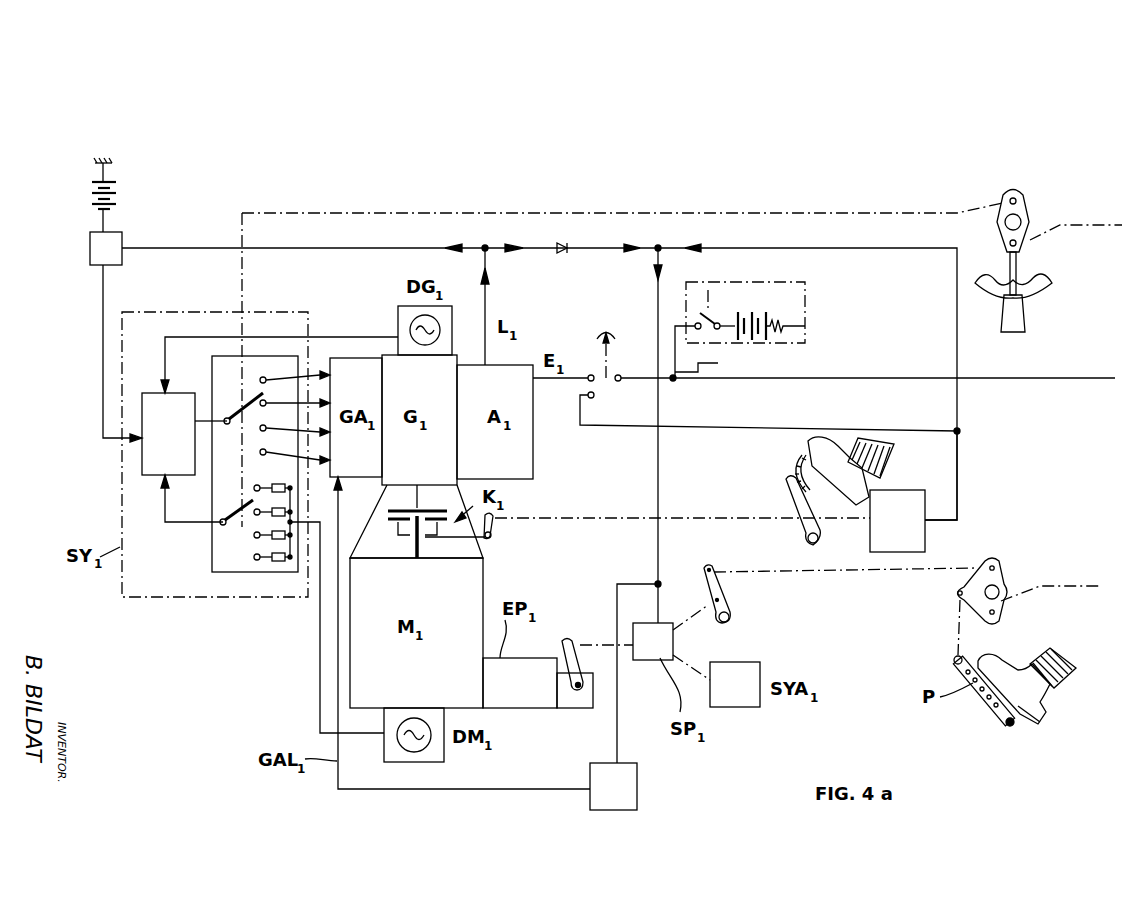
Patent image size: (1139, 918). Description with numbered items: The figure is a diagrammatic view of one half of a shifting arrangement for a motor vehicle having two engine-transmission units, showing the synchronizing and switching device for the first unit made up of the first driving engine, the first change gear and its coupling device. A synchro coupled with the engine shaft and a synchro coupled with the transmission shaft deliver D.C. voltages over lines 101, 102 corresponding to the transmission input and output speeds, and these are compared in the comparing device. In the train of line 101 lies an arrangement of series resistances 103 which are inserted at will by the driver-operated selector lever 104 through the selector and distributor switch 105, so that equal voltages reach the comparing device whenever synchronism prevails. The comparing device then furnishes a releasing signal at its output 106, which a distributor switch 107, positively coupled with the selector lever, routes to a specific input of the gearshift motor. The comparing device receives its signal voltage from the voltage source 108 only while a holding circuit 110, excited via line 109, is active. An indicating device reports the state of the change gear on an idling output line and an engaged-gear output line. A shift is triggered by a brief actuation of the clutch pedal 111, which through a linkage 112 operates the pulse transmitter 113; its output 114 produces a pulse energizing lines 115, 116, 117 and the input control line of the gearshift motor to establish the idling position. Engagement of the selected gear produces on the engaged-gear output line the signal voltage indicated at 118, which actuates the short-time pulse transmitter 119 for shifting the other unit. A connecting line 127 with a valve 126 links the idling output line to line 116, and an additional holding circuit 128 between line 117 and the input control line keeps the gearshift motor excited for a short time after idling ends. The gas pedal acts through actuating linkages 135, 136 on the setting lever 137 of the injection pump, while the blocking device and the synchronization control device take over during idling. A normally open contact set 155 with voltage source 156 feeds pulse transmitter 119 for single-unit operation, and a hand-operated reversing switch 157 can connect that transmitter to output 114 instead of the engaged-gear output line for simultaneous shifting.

The line 101 is at (320, 628).
The line 102 is at (283, 340).
The series resistances 103 is at (240, 540).
The selector lever 104 is at (1013, 333).
The selector and distributor switch 105 is at (232, 572).
The output 106 is at (198, 402).
The distributor switch 107 is at (248, 388).
The voltage source 108 is at (118, 200).
The line 109 is at (300, 247).
The holding circuit 110 is at (113, 250).
The clutch pedal 111 is at (788, 482).
The linkage 112 is at (855, 522).
The pulse transmitter 113 is at (903, 500).
The output 114 is at (945, 520).
The line 115 is at (865, 251).
The line 116 is at (660, 487).
The line 117 is at (617, 723).
The signal voltage course 118 is at (722, 366).
The short-time pulse transmitter 119 is at (990, 393).
The valve 126 is at (563, 255).
The connecting line 127 is at (615, 250).
The holding circuit 128 is at (633, 793).
The actuating linkage 135 is at (770, 572).
The actuating linkage 136 is at (1030, 572).
The setting lever 137 is at (571, 658).
The contact set 155 is at (715, 320).
The voltage source 156 is at (790, 320).
The reversing switch 157 is at (606, 362).